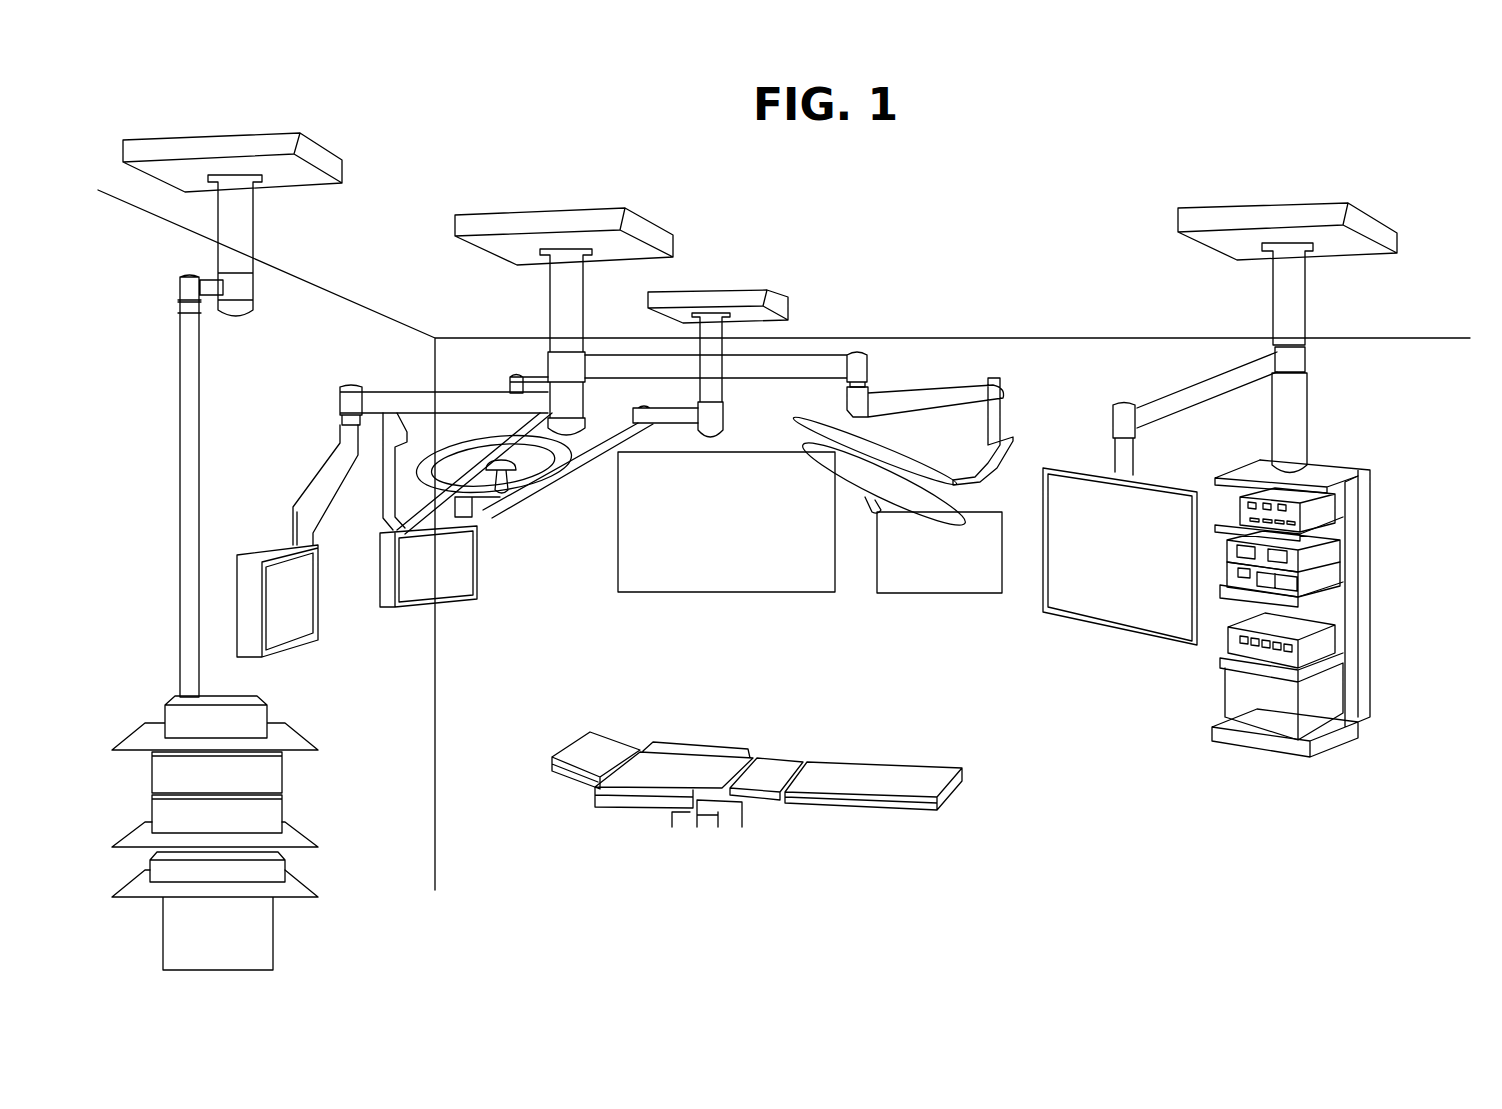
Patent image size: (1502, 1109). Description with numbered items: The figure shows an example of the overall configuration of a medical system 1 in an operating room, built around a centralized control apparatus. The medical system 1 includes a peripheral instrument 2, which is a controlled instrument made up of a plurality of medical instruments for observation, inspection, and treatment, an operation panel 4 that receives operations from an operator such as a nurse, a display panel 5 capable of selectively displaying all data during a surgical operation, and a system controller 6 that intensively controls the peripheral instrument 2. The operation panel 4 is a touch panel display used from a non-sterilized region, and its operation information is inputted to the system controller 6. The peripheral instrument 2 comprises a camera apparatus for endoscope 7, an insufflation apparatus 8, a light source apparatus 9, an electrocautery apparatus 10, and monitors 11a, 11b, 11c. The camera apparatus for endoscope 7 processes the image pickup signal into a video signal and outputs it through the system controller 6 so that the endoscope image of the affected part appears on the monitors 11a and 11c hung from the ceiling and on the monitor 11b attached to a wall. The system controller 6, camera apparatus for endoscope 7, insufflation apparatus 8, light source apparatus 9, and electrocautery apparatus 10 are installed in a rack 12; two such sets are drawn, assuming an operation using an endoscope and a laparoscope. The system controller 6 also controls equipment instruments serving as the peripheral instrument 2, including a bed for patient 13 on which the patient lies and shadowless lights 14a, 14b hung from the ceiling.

The medical system 1 is at (934, 179).
The peripheral instrument 2 is at (925, 190).
The operation panel 4 is at (270, 555).
The display panel 5 is at (983, 593).
The system controller 6 is at (258, 911).
The camera apparatus for endoscope 7 is at (258, 720).
The insufflation apparatus 8 is at (258, 771).
The light source apparatus 9 is at (258, 811).
The electrocautery apparatus 10 is at (258, 860).
The monitor 11a is at (455, 600).
The monitor 11b is at (827, 593).
The monitor 11c is at (1148, 635).
The rack 12 is at (1335, 745).
The bed for patient 13 is at (642, 758).
The shadowless light 14a is at (543, 483).
The shadowless light 14b is at (945, 507).